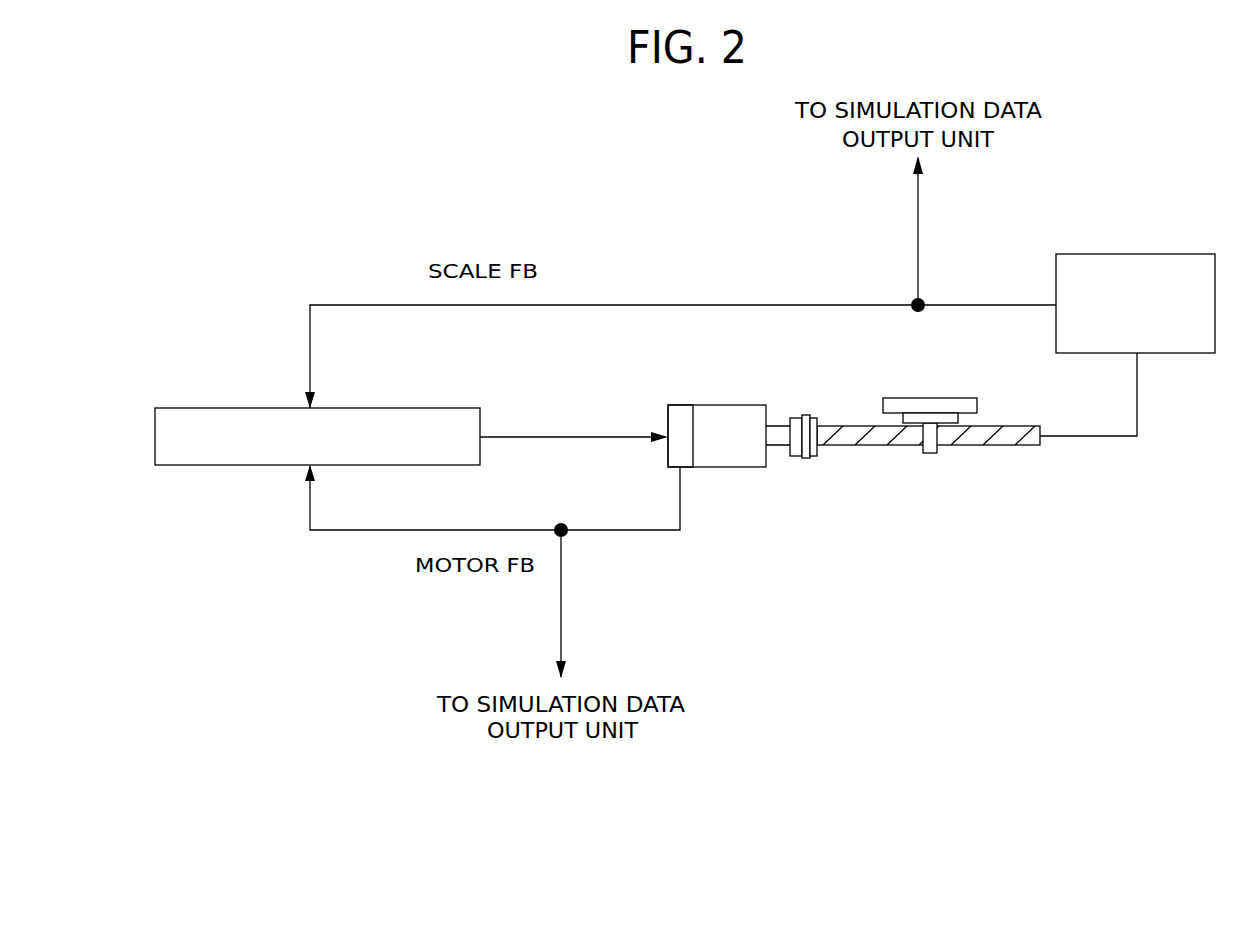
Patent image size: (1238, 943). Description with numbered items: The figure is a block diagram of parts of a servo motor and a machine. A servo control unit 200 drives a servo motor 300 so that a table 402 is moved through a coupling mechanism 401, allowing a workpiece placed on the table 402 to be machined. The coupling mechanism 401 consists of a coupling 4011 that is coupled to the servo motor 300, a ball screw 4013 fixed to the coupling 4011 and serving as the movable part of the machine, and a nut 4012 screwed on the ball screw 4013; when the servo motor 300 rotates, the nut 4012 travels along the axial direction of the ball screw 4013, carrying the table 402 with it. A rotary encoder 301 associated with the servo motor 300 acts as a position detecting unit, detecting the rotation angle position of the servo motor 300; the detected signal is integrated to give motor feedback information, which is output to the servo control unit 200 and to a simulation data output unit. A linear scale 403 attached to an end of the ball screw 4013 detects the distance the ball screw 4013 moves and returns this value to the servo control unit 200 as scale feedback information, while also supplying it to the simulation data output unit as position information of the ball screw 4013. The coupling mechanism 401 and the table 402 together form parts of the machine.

The servo control unit 200 is at (413, 408).
The servo motor 300 is at (742, 405).
The rotary encoder 301 is at (680, 405).
The coupling mechanism 401 is at (912, 473).
The coupling 4011 is at (803, 416).
The nut 4012 is at (928, 453).
The ball screw 4013 is at (1013, 447).
The table 402 is at (931, 398).
The linear scale 403 is at (1125, 254).